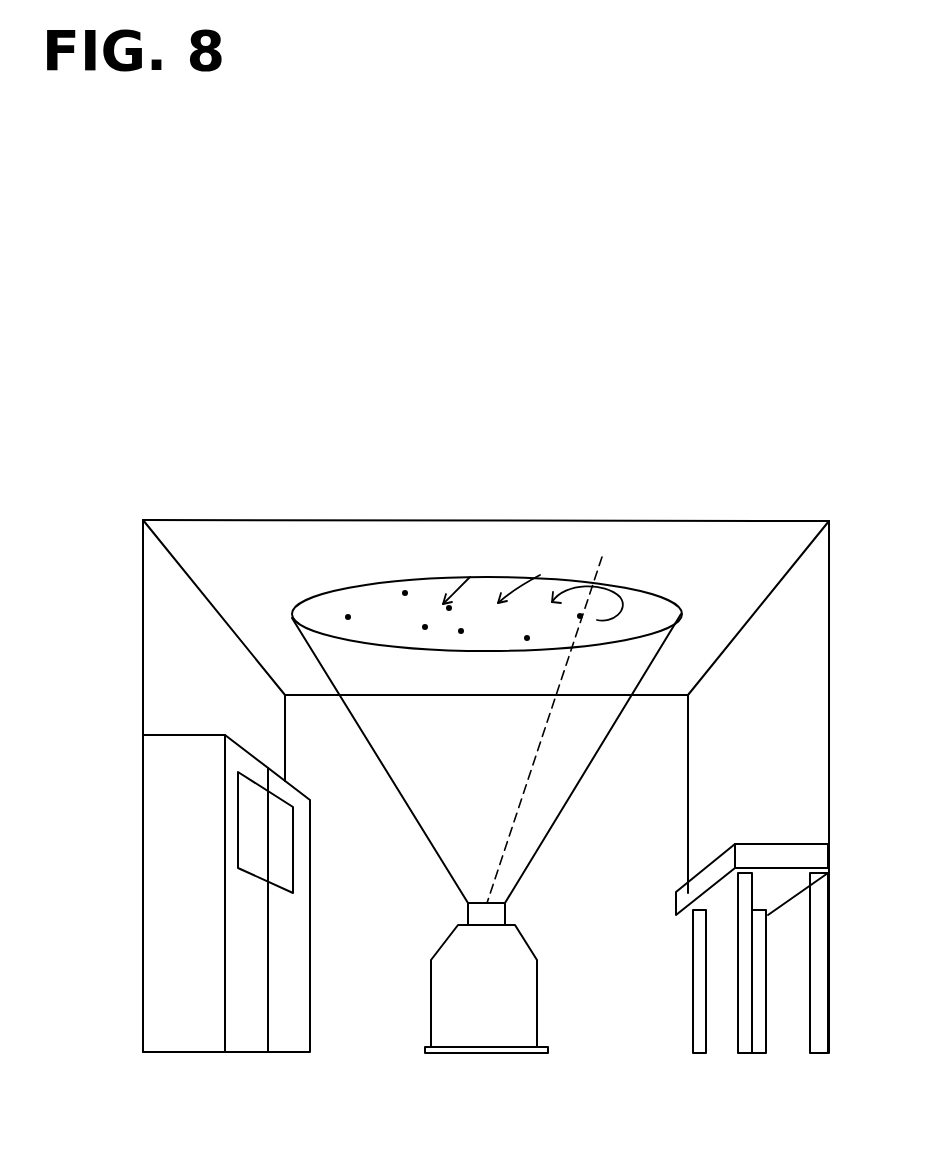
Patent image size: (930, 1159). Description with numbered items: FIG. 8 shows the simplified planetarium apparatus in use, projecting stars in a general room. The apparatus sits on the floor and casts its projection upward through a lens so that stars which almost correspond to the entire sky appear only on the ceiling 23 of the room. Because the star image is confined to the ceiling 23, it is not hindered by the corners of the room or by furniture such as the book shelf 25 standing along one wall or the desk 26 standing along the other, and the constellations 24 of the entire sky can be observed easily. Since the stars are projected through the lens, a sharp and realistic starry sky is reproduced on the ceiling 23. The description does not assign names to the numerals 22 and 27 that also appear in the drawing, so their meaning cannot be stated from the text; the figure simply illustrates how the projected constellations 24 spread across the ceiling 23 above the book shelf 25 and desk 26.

The vortex airflow 22 is at (597, 620).
The ceiling 23 is at (733, 537).
The constellations 24 is at (440, 575).
The book shelf 25 is at (298, 993).
The desk 26 is at (697, 1018).
The projector 27 is at (468, 1022).